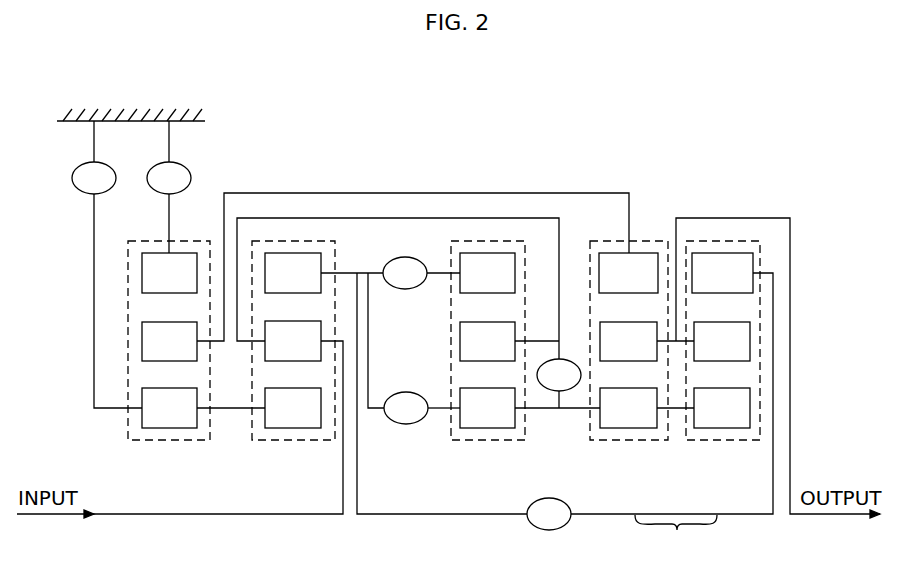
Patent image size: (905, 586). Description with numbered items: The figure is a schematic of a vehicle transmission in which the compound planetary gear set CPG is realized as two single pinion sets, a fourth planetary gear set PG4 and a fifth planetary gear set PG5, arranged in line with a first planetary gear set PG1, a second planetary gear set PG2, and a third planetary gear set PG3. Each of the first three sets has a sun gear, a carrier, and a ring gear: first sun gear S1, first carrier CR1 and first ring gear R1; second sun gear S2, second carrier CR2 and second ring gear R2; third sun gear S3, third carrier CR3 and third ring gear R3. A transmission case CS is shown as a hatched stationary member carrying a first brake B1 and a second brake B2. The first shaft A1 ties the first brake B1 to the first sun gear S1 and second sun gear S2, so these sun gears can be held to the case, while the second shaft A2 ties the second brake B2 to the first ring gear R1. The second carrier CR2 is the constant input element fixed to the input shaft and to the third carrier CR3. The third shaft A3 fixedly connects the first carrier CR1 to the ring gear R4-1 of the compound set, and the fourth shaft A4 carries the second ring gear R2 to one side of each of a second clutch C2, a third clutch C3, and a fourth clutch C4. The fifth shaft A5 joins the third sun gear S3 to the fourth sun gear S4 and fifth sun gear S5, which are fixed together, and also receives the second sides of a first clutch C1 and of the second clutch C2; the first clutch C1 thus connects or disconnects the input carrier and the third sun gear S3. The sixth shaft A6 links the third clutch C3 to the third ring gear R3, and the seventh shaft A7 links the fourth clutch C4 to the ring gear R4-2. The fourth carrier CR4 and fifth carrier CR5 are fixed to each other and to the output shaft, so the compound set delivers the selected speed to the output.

The transmission case CS is at (145, 108).
The first brake B1 is at (94, 157).
The second brake B2 is at (169, 157).
The first shaft A1 is at (94, 298).
The second shaft A2 is at (168, 217).
The third shaft A3 is at (297, 193).
The fourth shaft A4 is at (344, 273).
The fifth shaft A5 is at (572, 412).
The sixth shaft A6 is at (432, 290).
The seventh shaft A7 is at (740, 516).
The first clutch C1 is at (559, 375).
The second clutch C2 is at (406, 408).
The third clutch C3 is at (405, 273).
The fourth clutch C4 is at (549, 514).
The first planetary gear set PG1 is at (169, 375).
The second planetary gear set PG2 is at (293, 375).
The third planetary gear set PG3 is at (486, 375).
The fourth planetary gear set PG4 is at (629, 375).
The fifth planetary gear set PG5 is at (723, 375).
The compound planetary gear set CPG is at (676, 533).
The first ring gear R1 is at (169, 273).
The second ring gear R2 is at (293, 273).
The third ring gear R3 is at (487, 273).
The 4-1th ring gear R4-1 is at (628, 273).
The 4-2th ring gear R4-2 is at (722, 273).
The first carrier CR1 is at (169, 341).
The second carrier CR2 is at (293, 341).
The third carrier CR3 is at (487, 341).
The fourth carrier CR4 is at (628, 341).
The fifth carrier CR5 is at (722, 341).
The first sun gear S1 is at (169, 408).
The second sun gear S2 is at (293, 408).
The third sun gear S3 is at (487, 408).
The fourth sun gear S4 is at (628, 408).
The fifth sun gear S5 is at (722, 408).